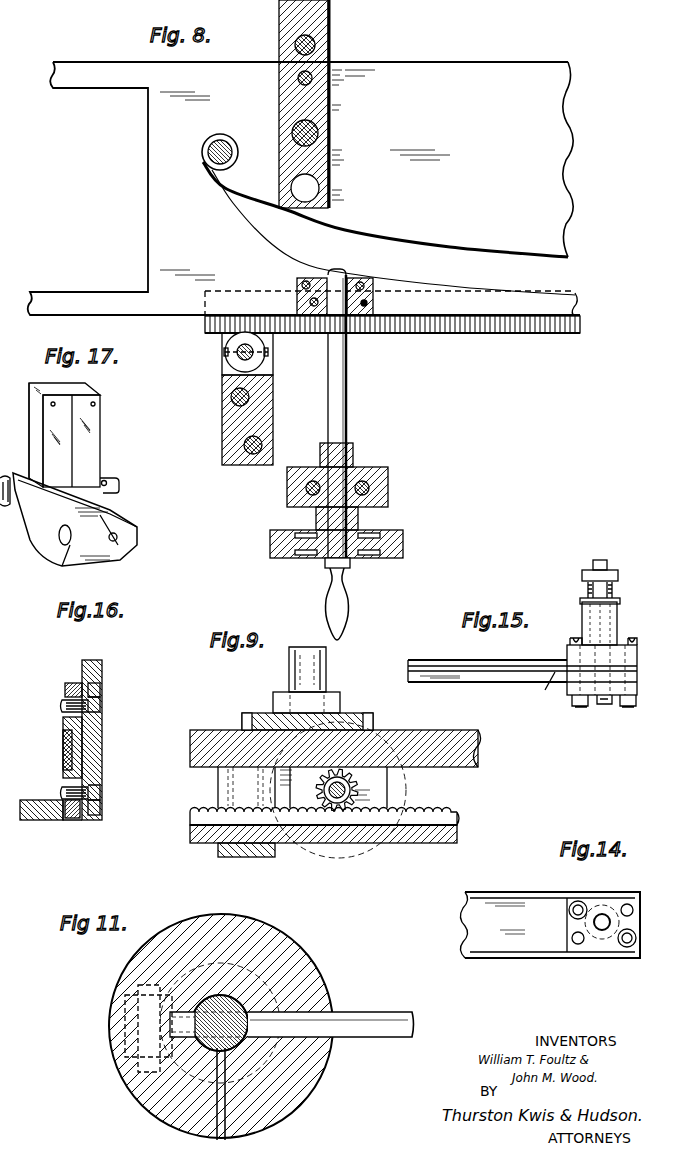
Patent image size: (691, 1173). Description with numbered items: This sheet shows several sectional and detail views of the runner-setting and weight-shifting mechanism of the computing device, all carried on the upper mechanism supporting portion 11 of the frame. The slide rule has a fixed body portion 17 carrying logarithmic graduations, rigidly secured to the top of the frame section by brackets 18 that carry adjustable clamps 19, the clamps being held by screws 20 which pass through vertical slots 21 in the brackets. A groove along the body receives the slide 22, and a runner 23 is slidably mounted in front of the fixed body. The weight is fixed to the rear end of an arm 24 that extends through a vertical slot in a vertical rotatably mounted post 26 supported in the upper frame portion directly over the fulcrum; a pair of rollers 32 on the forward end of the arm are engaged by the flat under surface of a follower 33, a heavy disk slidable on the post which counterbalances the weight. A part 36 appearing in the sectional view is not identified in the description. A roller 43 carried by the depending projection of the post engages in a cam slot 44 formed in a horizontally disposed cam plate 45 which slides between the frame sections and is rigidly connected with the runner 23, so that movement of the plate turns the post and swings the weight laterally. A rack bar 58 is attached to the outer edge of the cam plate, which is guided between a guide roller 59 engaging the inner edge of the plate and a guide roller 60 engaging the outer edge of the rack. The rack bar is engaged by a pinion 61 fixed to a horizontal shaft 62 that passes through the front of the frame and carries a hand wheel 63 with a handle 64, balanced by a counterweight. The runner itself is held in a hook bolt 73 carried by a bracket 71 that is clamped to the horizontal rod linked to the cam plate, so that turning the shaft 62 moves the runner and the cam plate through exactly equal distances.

In FIG. 9, the upper mechanism supporting portion 11 is at (445, 723).
In FIG. 16, the fixed body portion 17 is at (62, 738).
In FIG. 15, the fixed body portion 17 is at (452, 658).
In FIG. 14, the fixed body portion 17 is at (532, 882).
In FIG. 16, the brackets 18 is at (103, 738).
In FIG. 15, the brackets 18 is at (637, 657).
In FIG. 16, the adjustable clamps 19 is at (65, 690).
In FIG. 16, the screws 20 is at (100, 702).
In FIG. 16, the vertical slots 21 is at (100, 688).
In FIG. 16, the slide 22 is at (62, 757).
In FIG. 15, the slide 22 is at (552, 672).
In FIG. 17, the runner 23 is at (100, 432).
In FIG. 11, the arm 24 is at (368, 1008).
In FIG. 11, the rotatably mounted post 26 is at (235, 1010).
In FIG. 11, the rollers 32 is at (125, 1013).
In FIG. 11, the follower 33 is at (318, 988).
In FIG. 9, the shaft 36 is at (327, 679).
In FIG. 8, the roller 43 is at (232, 152).
In FIG. 8, the cam slot 44 is at (451, 254).
In FIG. 8, the cam plate 45 is at (446, 76).
In FIG. 9, the cam plate 45 is at (432, 843).
In FIG. 8, the rack bar 58 is at (464, 333).
In FIG. 9, the rack bar 58 is at (437, 812).
In FIG. 8, the guide roller 59 is at (224, 358).
In FIG. 8, the guide roller 60 is at (320, 46).
In FIG. 8, the pinion 61 is at (349, 335).
In FIG. 9, the pinion 61 is at (352, 787).
In FIG. 8, the horizontal shaft 62 is at (347, 408).
In FIG. 9, the horizontal shaft 62 is at (308, 843).
In FIG. 8, the hand wheel 63 is at (403, 546).
In FIG. 9, the hand wheel 63 is at (356, 862).
In FIG. 8, the handle 64 is at (346, 597).
In FIG. 17, the bracket 71 is at (110, 510).
In FIG. 17, the hook bolt 73 is at (112, 486).